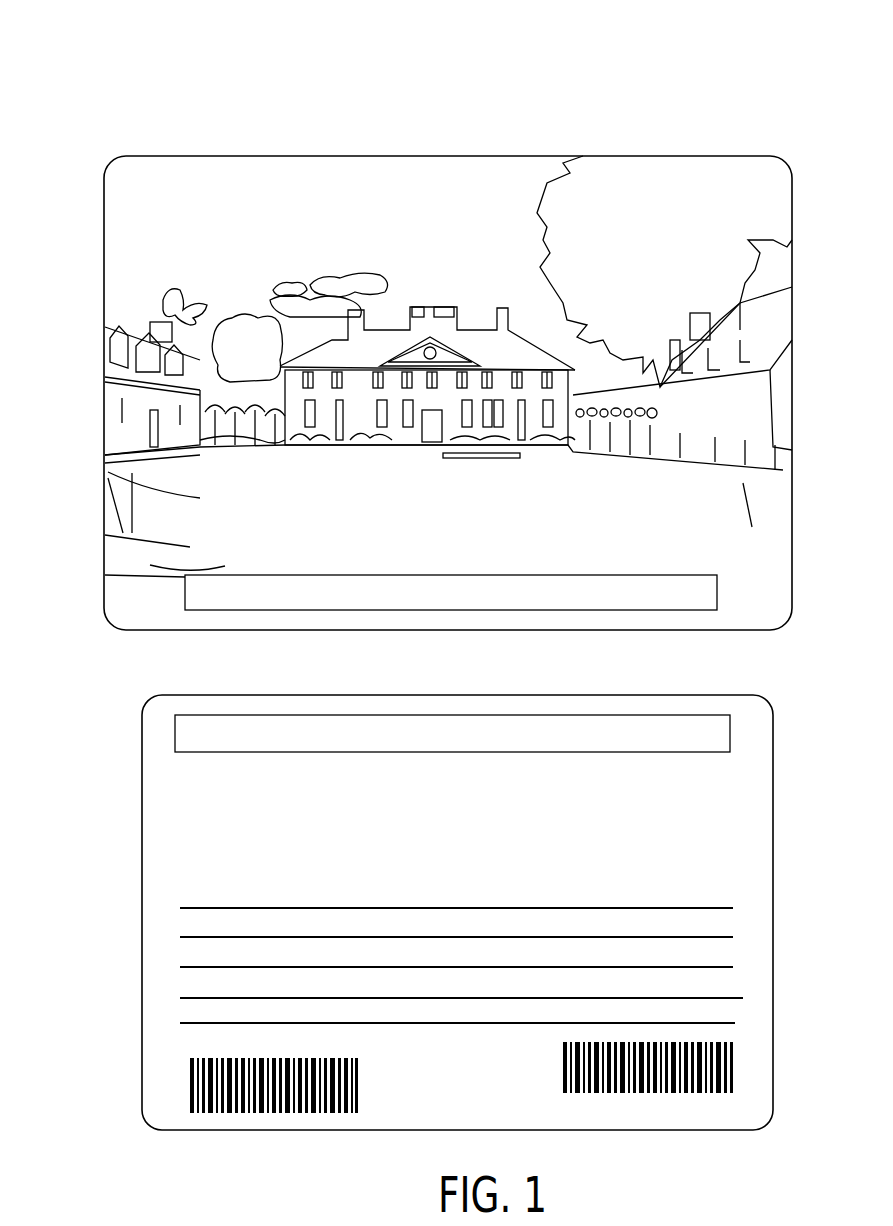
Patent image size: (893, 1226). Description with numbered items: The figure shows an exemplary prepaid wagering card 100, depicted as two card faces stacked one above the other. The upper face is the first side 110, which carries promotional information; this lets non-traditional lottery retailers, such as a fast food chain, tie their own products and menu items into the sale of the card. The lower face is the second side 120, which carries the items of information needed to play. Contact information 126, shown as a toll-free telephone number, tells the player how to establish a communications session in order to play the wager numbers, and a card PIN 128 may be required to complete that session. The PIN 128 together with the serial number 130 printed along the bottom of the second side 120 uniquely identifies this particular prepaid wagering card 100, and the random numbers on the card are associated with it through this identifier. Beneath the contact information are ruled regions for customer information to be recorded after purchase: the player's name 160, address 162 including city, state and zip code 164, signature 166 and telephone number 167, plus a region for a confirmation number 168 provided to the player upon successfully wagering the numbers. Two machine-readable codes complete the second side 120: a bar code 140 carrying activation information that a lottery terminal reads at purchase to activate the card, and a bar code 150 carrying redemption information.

The prepaid wagering card 100 is at (422, 58).
The first side 110 is at (103, 183).
The second side 120 is at (142, 720).
The contact information 126 is at (718, 851).
The card PIN 128 is at (725, 881).
The serial number 130 is at (752, 1108).
The bar code 140 is at (163, 1082).
The bar code 150 is at (752, 1068).
The name region 160 is at (163, 922).
The address region 162 is at (163, 956).
The city, state and zip code region 164 is at (163, 986).
The signature region 166 is at (163, 1011).
The telephone number region 167 is at (743, 998).
The confirmation number region 168 is at (163, 1042).